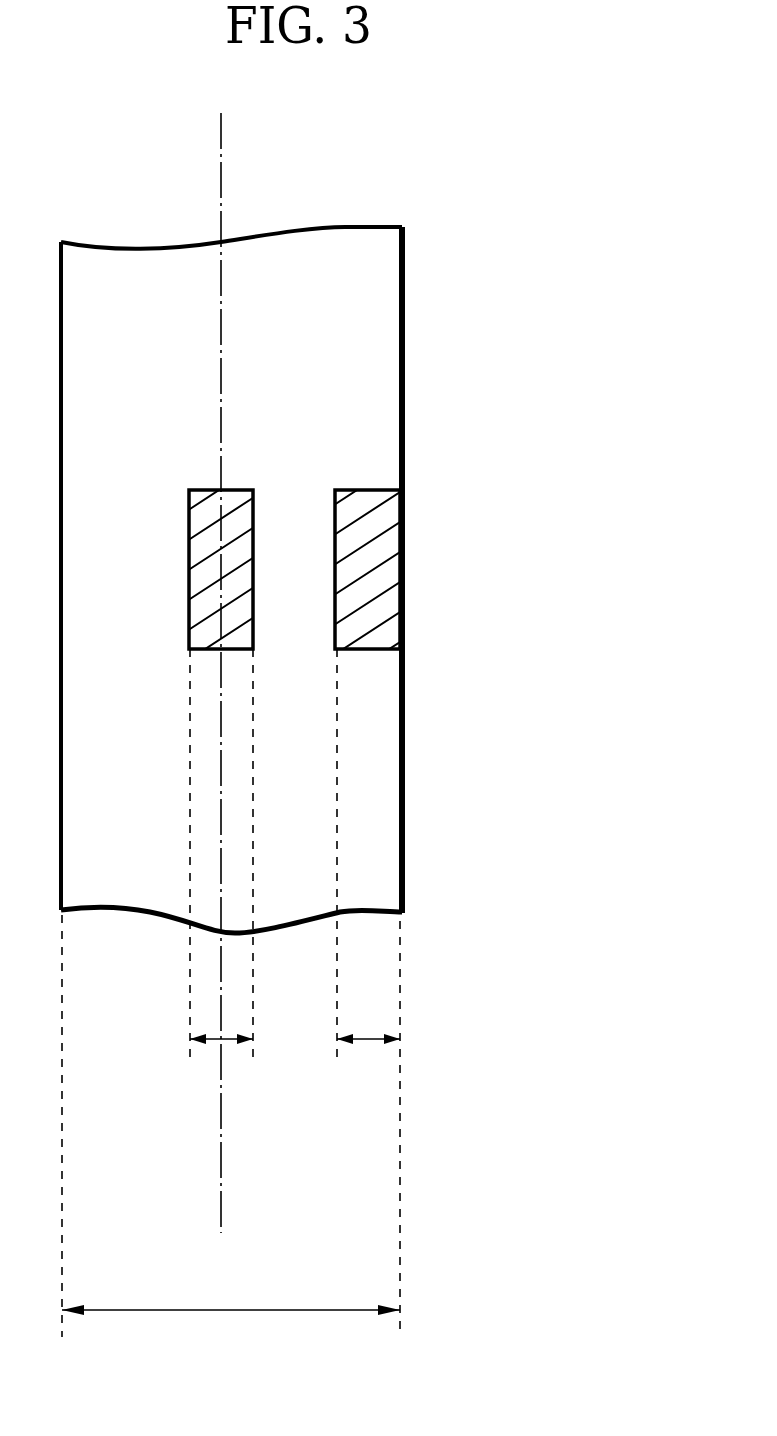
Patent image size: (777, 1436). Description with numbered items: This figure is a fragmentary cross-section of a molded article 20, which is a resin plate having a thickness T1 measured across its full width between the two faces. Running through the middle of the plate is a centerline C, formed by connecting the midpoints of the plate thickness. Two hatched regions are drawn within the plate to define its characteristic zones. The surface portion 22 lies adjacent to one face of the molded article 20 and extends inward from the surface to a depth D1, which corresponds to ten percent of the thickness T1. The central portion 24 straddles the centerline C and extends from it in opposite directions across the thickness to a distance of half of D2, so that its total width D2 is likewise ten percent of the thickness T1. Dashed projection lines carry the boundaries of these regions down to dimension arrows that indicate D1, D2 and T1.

The centerline C is at (222, 208).
The molded article 20 is at (403, 301).
The surface portion 22 is at (378, 576).
The central portion 24 is at (247, 489).
The depth of surface portion D1 is at (368, 993).
The width of central portion D2 is at (220, 1039).
The thickness of molded article T1 is at (231, 1138).